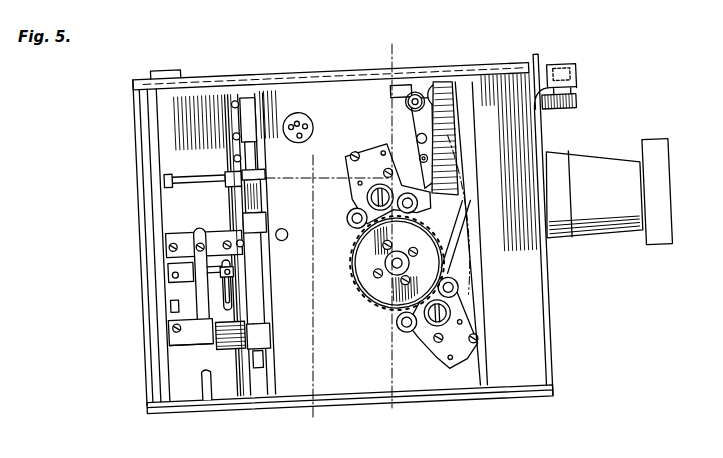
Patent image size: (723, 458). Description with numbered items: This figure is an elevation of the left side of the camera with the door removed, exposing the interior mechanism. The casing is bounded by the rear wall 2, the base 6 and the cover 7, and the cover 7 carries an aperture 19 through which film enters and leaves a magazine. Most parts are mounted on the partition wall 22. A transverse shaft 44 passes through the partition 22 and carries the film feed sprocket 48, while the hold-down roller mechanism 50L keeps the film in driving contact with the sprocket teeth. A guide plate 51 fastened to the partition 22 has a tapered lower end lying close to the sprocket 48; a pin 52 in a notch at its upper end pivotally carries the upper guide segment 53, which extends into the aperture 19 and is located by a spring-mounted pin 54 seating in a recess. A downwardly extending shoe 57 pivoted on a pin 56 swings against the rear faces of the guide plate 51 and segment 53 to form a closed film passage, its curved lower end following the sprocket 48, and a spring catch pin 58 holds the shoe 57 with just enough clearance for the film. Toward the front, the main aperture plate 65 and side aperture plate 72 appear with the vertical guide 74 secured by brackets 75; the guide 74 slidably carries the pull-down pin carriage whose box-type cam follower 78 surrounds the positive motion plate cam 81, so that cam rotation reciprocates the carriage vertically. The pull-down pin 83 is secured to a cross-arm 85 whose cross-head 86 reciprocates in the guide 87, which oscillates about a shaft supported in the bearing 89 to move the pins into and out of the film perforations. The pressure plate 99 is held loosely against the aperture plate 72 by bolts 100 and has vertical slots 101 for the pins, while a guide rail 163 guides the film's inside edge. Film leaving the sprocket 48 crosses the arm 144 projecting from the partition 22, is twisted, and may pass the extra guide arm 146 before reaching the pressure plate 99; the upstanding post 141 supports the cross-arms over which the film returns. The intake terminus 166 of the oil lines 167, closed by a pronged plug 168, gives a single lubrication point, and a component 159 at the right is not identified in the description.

The rear wall 2 is at (553, 340).
The base 6 is at (462, 394).
The cover 7 is at (290, 77).
The aperture 19 is at (402, 80).
The partition wall 22 is at (403, 420).
The transverse shaft 44 is at (372, 297).
The film feed sprocket 48 is at (394, 268).
The hold-down roller mechanism 50L is at (440, 354).
The guide plate 51 is at (456, 189).
The pin 52 is at (418, 139).
The upper guide segment 53 is at (412, 100).
The pin 54 is at (411, 106).
The pin 56 is at (462, 74).
The shoe 57 is at (457, 158).
The spring catch pin 58 is at (462, 224).
The main aperture plate 65 is at (152, 181).
The side aperture plate 72 is at (176, 232).
The vertical guide 74 is at (258, 161).
The brackets 75 is at (270, 364).
The cam follower 78 is at (263, 214).
The positive motion plate cam 81 is at (265, 209).
The pull down pin 83 is at (171, 274).
The cross-arm 85 is at (176, 263).
The cross-head 86 is at (195, 290).
The guide 87 is at (221, 293).
The bearing 89 is at (262, 350).
The pressure plate 99 is at (172, 344).
The bolts 100 is at (172, 329).
The vertical slots 101 is at (172, 304).
The upstanding post 141 is at (205, 389).
The arm 144 is at (288, 241).
The guide arm 146 is at (188, 176).
The lens tube 159 is at (613, 159).
The guide rail 163 is at (245, 393).
The intake terminus 166 is at (300, 119).
The oil lines 167 is at (305, 141).
The pronged plug 168 is at (310, 118).